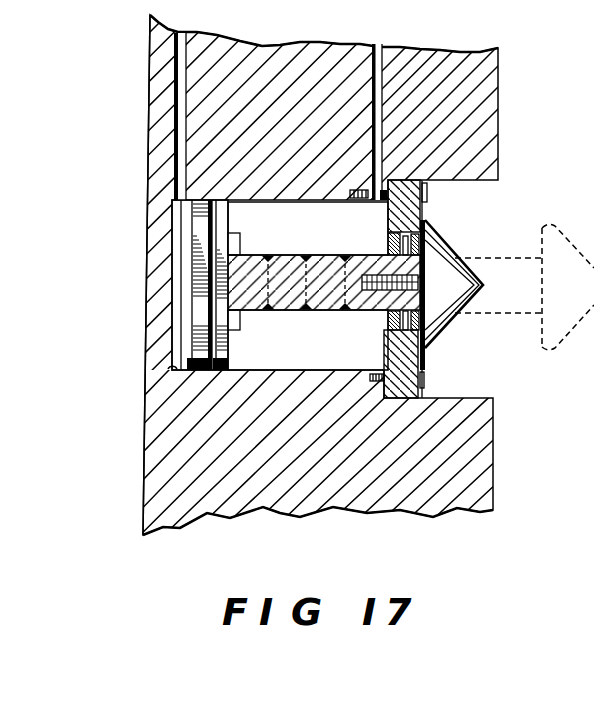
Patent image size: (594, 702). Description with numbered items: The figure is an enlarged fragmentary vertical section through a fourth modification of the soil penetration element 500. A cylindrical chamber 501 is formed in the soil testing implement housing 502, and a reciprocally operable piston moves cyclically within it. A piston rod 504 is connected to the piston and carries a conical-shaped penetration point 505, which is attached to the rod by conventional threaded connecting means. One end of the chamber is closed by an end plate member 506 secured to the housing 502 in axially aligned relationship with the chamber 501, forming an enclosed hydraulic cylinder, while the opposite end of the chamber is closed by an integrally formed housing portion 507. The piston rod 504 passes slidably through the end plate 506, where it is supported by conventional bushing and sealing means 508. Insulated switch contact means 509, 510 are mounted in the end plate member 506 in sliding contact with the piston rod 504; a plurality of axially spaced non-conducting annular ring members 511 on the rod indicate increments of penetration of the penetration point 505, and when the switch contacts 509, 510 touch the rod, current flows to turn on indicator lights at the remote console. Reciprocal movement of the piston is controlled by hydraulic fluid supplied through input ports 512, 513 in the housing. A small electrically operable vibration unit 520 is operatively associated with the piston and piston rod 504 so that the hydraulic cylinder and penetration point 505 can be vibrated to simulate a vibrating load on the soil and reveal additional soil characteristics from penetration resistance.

The soil penetration element 500 is at (483, 215).
The cylindrical chamber 501 is at (168, 370).
The soil testing implement housing 502 is at (281, 42).
The piston rod 504 is at (376, 253).
The conical-shaped penetration point 505 is at (457, 253).
The end plate member 506 is at (424, 370).
The integrally formed housing portion 507 is at (147, 304).
The bushing and sealing means 508 is at (386, 326).
The insulated switch contact means 509 is at (427, 211).
The insulated switch contact means 510 is at (422, 343).
The non-conducting annular ring members 511 is at (269, 257).
The input port 512 is at (182, 33).
The input port 513 is at (382, 44).
The vibration unit 520 is at (242, 233).